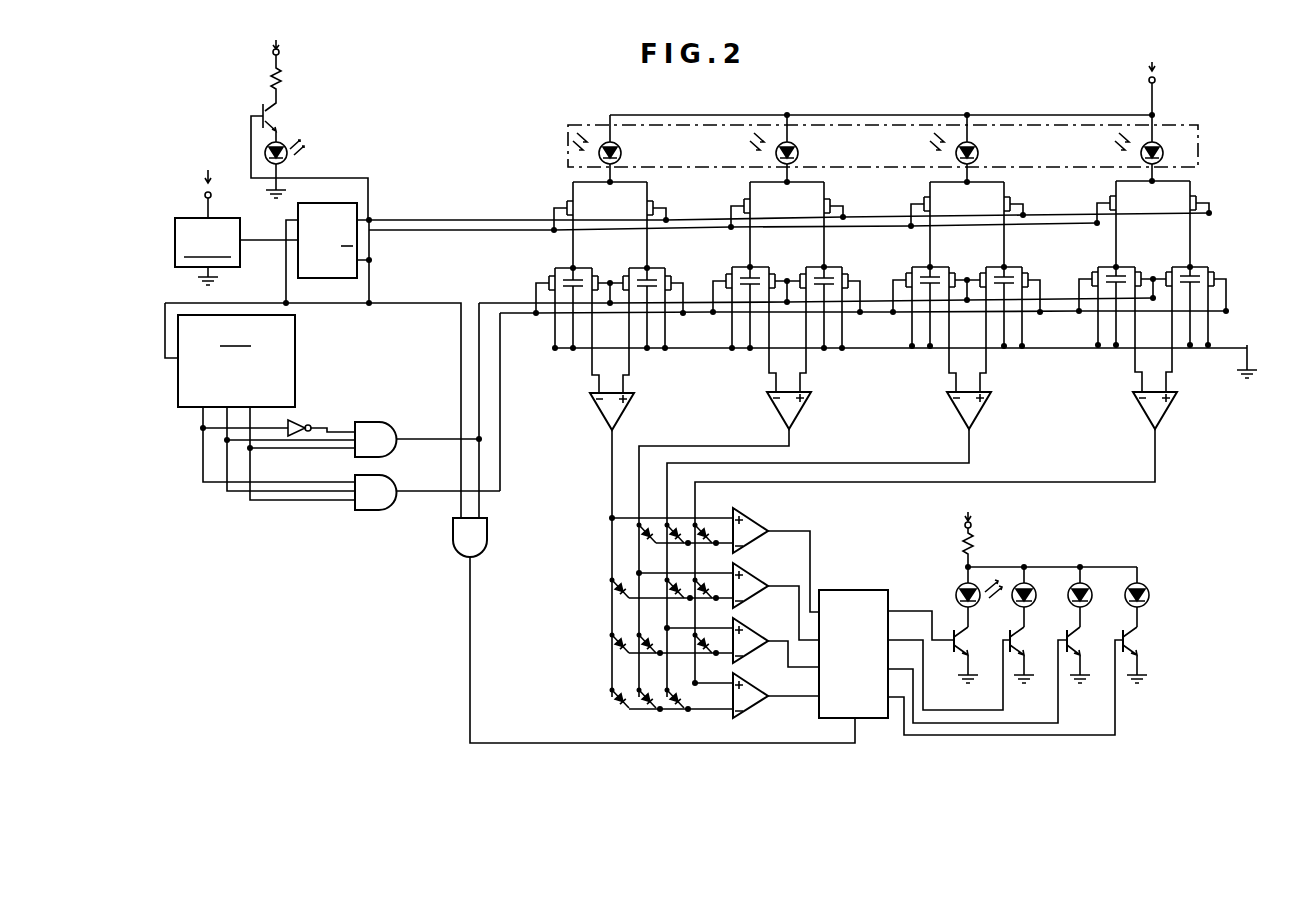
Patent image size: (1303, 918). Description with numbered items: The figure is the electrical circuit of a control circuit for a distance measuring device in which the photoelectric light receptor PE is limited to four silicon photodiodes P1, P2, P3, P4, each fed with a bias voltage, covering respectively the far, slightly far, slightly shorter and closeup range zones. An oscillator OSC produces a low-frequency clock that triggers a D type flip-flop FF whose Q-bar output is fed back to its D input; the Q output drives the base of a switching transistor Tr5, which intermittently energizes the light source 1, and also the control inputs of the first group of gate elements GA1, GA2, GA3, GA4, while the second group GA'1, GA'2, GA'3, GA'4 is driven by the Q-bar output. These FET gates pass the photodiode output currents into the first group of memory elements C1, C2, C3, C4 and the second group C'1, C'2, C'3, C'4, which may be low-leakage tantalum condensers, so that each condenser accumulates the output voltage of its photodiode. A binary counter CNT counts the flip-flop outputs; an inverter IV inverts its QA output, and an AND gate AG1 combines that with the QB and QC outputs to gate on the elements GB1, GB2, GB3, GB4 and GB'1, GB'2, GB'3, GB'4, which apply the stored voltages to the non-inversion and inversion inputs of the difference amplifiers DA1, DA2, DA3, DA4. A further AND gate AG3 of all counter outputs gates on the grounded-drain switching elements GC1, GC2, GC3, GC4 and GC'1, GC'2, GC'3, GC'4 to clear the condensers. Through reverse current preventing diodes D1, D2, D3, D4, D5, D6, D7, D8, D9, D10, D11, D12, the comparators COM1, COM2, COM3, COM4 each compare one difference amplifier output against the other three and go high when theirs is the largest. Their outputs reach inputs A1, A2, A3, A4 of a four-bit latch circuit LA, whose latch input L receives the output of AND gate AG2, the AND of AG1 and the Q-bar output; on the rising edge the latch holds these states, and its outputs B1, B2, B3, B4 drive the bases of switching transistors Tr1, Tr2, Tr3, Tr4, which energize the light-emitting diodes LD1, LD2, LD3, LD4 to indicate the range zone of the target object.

The switching transistor Tr5 is at (278, 108).
The light source 1 is at (287, 157).
The D type flip-flop FF is at (350, 203).
The oscillator OSC is at (236, 214).
The binary counter CNT is at (260, 401).
The inverter IV is at (300, 419).
The AND gate AG1 is at (392, 423).
The AND gate AG2 is at (487, 533).
The AND gate AG3 is at (392, 476).
The photoelectric light receptor PE is at (1196, 106).
The photosensitive element P1 is at (621, 153).
The photosensitive element P2 is at (798, 153).
The photosensitive element P3 is at (978, 153).
The photosensitive element P4 is at (1163, 153).
The gate element GA'1 is at (547, 218).
The gate element GA'2 is at (728, 222).
The gate element GA'3 is at (908, 221).
The gate element GA'4 is at (1092, 220).
The gate element GA1 is at (662, 196).
The gate element GA2 is at (838, 195).
The gate element GA3 is at (1018, 193).
The gate element GA4 is at (1198, 197).
The gate element GB'1 is at (599, 313).
The gate element GB'2 is at (777, 312).
The gate element GB'3 is at (961, 311).
The gate element GB'4 is at (1143, 310).
The gate element GB1 is at (622, 276).
The gate element GB2 is at (799, 274).
The gate element GB3 is at (979, 273).
The gate element GB4 is at (1165, 272).
The switching element GC'1 is at (534, 296).
The switching element GC'2 is at (721, 292).
The switching element GC'3 is at (908, 290).
The switching element GC'4 is at (1098, 288).
The switching element GC1 is at (673, 276).
The switching element GC2 is at (850, 274).
The switching element GC3 is at (1030, 273).
The switching element GC4 is at (1216, 272).
The memory element C'1 is at (559, 308).
The memory element C'2 is at (738, 307).
The memory element C'3 is at (918, 306).
The memory element C'4 is at (1104, 306).
The memory element C1 is at (644, 287).
The memory element C2 is at (821, 285).
The memory element C3 is at (1001, 284).
The memory element C4 is at (1187, 283).
The difference amplifier DA1 is at (626, 407).
The difference amplifier DA2 is at (803, 406).
The difference amplifier DA3 is at (983, 406).
The difference amplifier DA4 is at (1169, 406).
The reverse current preventing diode D1 is at (650, 549).
The reverse current preventing diode D2 is at (678, 549).
The reverse current preventing diode D3 is at (706, 549).
The reverse current preventing diode D4 is at (624, 603).
The reverse current preventing diode D5 is at (679, 603).
The reverse current preventing diode D6 is at (706, 603).
The reverse current preventing diode D7 is at (624, 658).
The reverse current preventing diode D8 is at (651, 658).
The reverse current preventing diode D9 is at (706, 658).
The reverse current preventing diode D10 is at (622, 713).
The reverse current preventing diode D11 is at (660, 716).
The reverse current preventing diode D12 is at (687, 716).
The comparator COM1 is at (757, 503).
The comparator COM2 is at (757, 558).
The comparator COM3 is at (757, 613).
The comparator COM4 is at (757, 668).
The 4-bit latch circuit LA is at (971, 639).
The latch input A1 is at (834, 613).
The latch input A2 is at (834, 641).
The latch input A3 is at (834, 669).
The latch input A4 is at (834, 697).
The latch output B1 is at (910, 619).
The latch output B2 is at (938, 668).
The latch output B3 is at (966, 681).
The latch output B4 is at (994, 687).
The latch signal input L is at (854, 704).
The light-emitting diode LD1 is at (958, 585).
The light-emitting diode LD2 is at (1030, 584).
The light-emitting diode LD3 is at (1086, 584).
The light-emitting diode LD4 is at (1158, 580).
The switching transistor Tr1 is at (977, 654).
The switching transistor Tr2 is at (1033, 654).
The switching transistor Tr3 is at (1090, 654).
The switching transistor Tr4 is at (1146, 654).